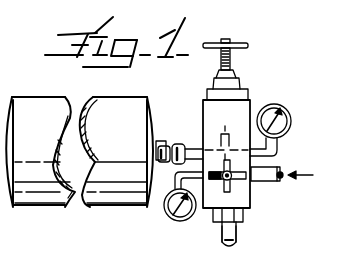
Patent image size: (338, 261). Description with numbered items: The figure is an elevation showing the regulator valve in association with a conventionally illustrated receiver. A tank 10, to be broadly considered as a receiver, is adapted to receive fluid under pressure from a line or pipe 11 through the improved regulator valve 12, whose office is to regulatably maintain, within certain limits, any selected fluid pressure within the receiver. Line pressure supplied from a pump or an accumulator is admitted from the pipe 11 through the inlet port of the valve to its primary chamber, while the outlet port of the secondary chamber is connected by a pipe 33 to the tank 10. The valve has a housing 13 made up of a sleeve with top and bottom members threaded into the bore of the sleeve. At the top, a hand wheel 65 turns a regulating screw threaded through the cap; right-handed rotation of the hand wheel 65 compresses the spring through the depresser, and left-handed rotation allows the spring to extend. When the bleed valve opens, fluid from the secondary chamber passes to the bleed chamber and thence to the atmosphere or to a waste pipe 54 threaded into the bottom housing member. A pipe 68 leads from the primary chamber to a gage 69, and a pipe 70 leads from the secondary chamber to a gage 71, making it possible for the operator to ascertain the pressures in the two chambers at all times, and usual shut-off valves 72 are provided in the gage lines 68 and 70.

The tank 10 is at (120, 107).
The line or pipe 11 is at (268, 182).
The regulator valve 12 is at (240, 130).
The housing 13 is at (212, 112).
The pipe 33 is at (192, 147).
The waste pipe 54 is at (235, 233).
The hand wheel 65 is at (242, 43).
The pipe 68 is at (163, 180).
The gage 69 is at (172, 222).
The pipe 70 is at (277, 153).
The gage 71 is at (292, 120).
The shut-off valves 72 is at (228, 137).